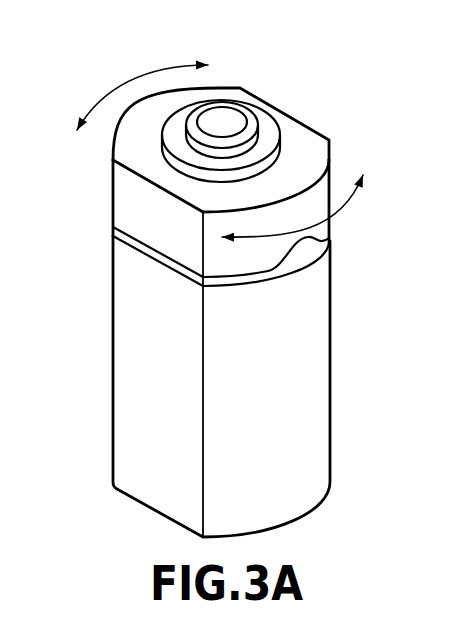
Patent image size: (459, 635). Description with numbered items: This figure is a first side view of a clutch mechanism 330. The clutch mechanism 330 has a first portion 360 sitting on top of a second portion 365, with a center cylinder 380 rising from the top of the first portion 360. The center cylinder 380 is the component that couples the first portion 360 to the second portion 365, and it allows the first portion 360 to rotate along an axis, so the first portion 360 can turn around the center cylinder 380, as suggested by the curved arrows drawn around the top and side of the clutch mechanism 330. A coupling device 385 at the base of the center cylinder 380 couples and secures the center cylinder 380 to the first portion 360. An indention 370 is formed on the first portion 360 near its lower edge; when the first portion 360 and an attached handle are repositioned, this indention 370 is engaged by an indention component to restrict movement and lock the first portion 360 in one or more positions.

The clutch mechanism 330 is at (216, 284).
The first portion 360 is at (212, 166).
The second portion 365 is at (113, 365).
The indention 370 is at (298, 249).
The center cylinder 380 is at (222, 118).
The coupling device 385 is at (270, 112).